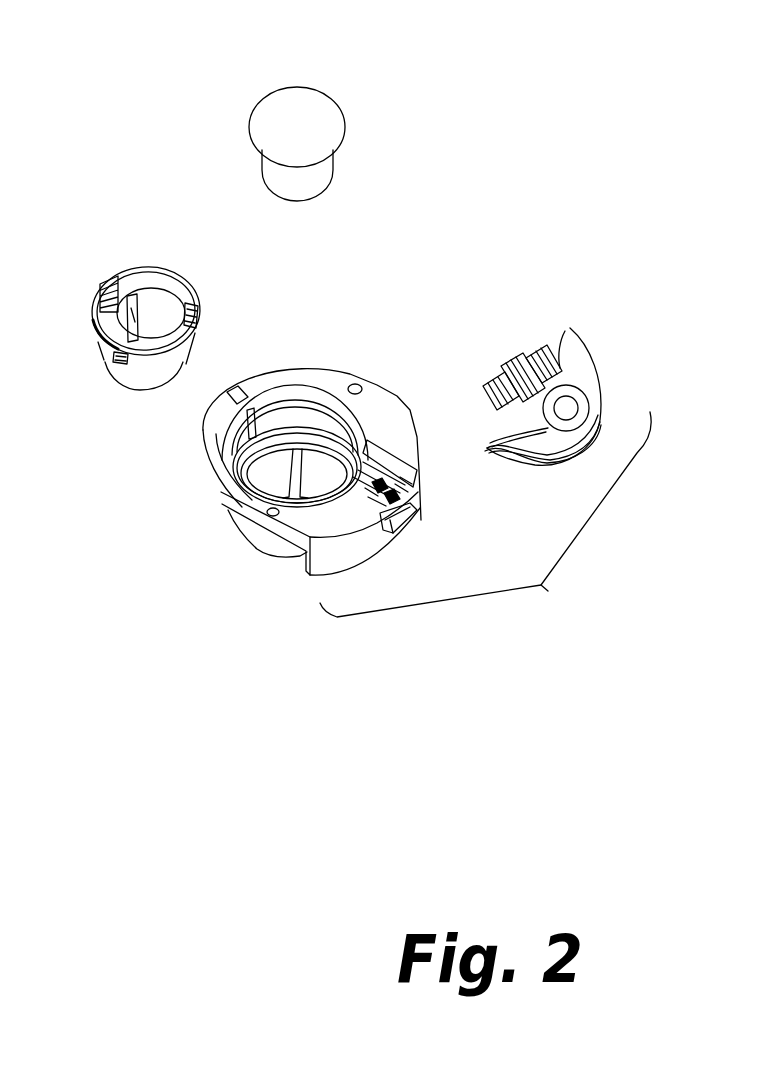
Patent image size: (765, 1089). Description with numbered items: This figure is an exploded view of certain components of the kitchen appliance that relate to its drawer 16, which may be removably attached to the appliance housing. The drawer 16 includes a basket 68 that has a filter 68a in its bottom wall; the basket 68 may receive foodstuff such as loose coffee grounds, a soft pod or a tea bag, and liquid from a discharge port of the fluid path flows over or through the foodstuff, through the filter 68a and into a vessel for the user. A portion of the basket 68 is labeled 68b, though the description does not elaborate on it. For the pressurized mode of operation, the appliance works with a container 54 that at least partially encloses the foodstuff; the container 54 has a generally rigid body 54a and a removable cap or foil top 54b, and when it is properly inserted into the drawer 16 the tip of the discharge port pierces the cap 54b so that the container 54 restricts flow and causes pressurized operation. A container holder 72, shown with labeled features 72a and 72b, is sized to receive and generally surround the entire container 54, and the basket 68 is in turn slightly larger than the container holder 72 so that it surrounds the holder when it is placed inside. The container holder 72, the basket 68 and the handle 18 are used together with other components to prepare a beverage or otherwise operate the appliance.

The drawer 16 is at (485, 514).
The handle 18 is at (587, 373).
The container 54 is at (356, 133).
The body 54a is at (298, 188).
The cap 54b is at (315, 110).
The basket 68 is at (325, 498).
The filter 68a is at (270, 477).
The mounting bracket 68b is at (415, 477).
The container holder 72 is at (151, 307).
The ring tab 72a is at (112, 360).
The ring tab 72b is at (135, 305).